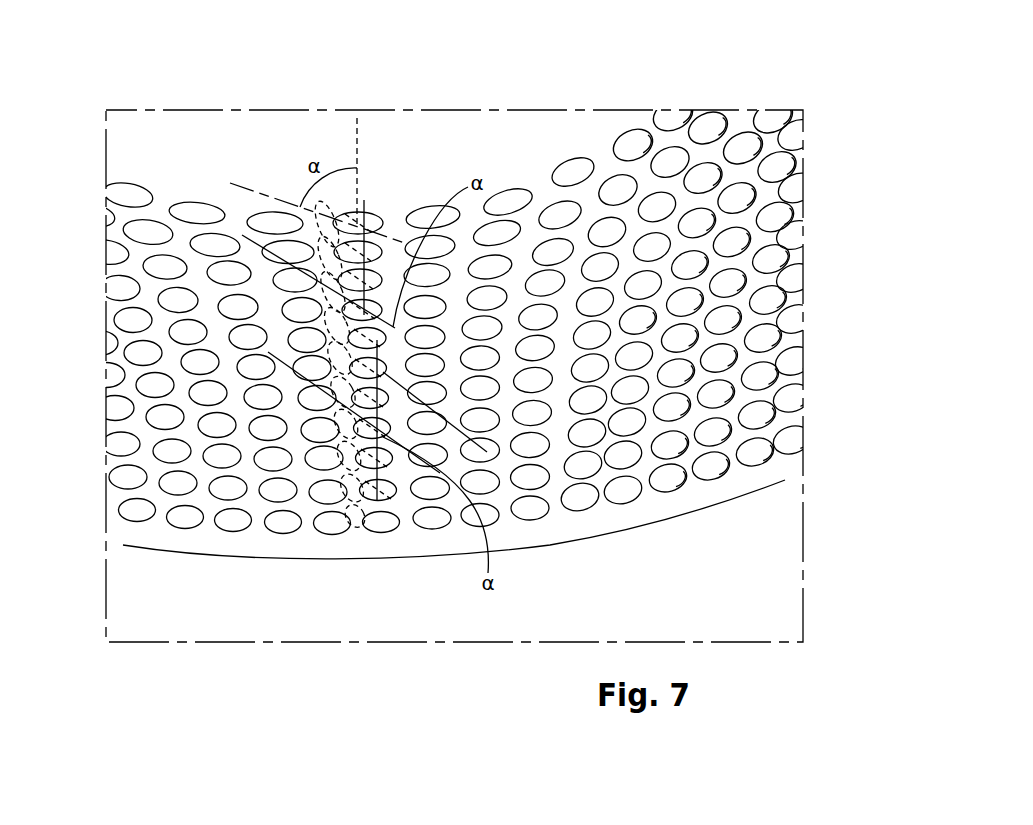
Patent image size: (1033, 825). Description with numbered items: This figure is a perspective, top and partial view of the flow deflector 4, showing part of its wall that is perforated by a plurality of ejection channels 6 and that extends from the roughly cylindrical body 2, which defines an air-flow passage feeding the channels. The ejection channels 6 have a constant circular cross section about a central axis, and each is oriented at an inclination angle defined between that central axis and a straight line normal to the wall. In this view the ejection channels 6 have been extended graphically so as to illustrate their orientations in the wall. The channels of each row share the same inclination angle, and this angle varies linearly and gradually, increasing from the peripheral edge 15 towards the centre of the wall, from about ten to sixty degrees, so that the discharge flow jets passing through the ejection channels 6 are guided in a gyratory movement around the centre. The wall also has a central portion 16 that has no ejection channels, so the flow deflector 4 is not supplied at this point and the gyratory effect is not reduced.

The body 2 is at (757, 592).
The flow deflector 4 is at (597, 137).
The ejection channels 6 is at (573, 170).
The peripheral edge 15 is at (747, 485).
The central portion 16 is at (430, 138).